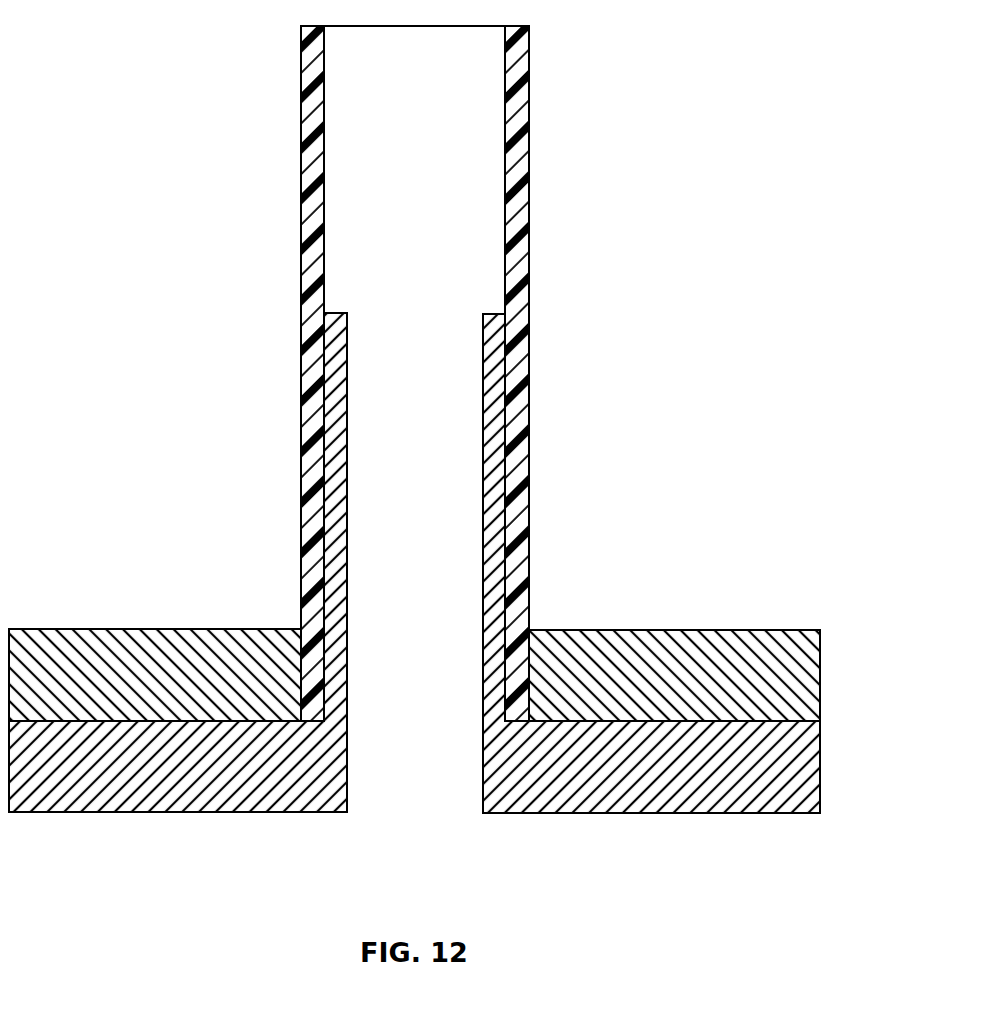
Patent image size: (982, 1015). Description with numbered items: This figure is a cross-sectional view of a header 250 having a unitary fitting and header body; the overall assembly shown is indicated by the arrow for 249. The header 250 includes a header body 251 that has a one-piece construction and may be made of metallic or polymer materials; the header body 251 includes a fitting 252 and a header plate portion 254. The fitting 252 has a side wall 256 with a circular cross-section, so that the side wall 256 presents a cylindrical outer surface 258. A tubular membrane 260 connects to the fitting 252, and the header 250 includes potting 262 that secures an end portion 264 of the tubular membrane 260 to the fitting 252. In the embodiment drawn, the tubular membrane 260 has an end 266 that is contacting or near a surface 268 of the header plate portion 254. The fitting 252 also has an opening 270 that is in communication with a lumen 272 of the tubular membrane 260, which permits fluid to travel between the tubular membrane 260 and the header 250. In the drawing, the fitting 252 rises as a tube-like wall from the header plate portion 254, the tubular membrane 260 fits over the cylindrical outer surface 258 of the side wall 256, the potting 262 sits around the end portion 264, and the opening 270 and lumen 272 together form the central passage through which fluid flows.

The assembly 249 is at (620, 134).
The header 250 is at (740, 852).
The header body 251 is at (801, 841).
The fitting 252 is at (338, 678).
The header plate portion 254 is at (797, 757).
The side wall 256 is at (498, 478).
The cylindrical outer surface 258 is at (505, 400).
The tubular membrane 260 is at (300, 392).
The potting 262 is at (157, 655).
The end portion 264 is at (302, 645).
The end 266 is at (325, 700).
The surface 268 is at (277, 722).
The opening 270 is at (413, 740).
The lumen 272 is at (343, 151).